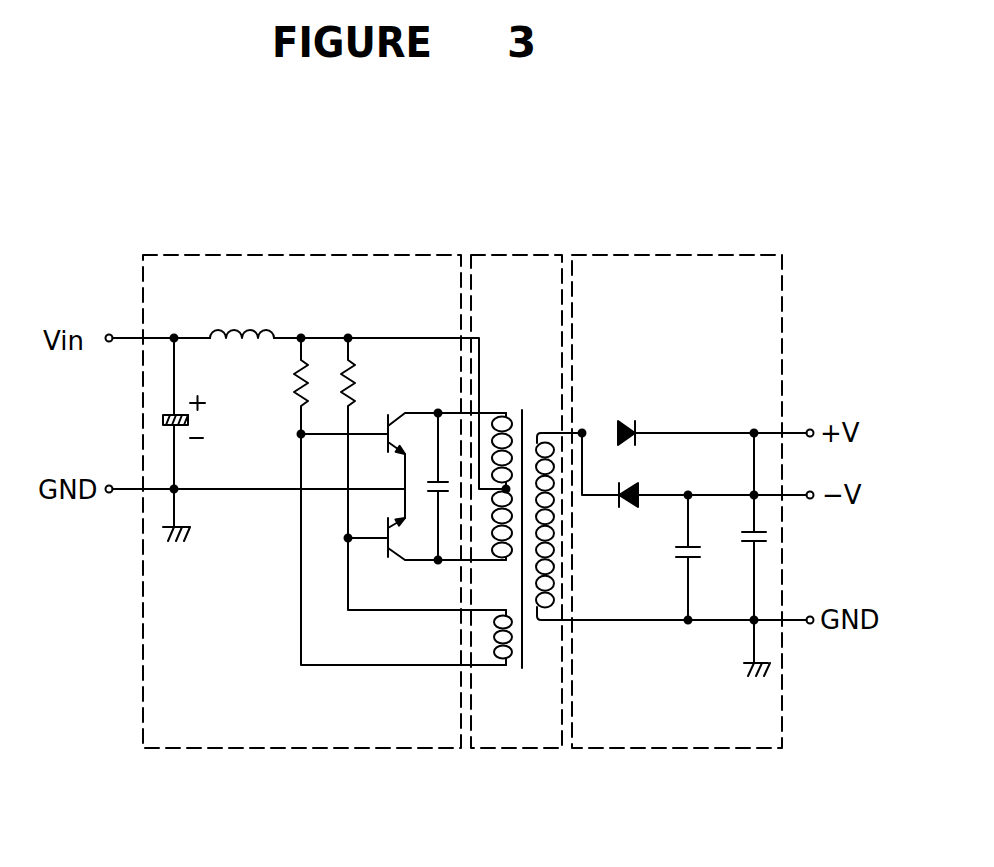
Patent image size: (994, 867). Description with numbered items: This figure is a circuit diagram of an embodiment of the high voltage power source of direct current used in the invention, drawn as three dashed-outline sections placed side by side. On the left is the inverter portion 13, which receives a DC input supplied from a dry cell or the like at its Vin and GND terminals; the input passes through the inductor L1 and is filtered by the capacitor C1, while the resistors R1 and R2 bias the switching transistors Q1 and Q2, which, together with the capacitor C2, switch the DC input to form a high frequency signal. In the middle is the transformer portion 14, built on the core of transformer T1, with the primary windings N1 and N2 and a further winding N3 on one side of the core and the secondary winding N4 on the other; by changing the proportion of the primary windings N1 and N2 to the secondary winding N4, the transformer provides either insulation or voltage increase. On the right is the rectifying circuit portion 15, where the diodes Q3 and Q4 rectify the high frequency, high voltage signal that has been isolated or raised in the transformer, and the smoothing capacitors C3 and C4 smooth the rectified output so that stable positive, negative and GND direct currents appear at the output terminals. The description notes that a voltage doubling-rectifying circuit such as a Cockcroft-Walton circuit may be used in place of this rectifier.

The inverter portion 13 is at (410, 270).
The transformer portion 14 is at (509, 270).
The rectifying circuit portion 15 is at (696, 270).
The input inductor L1 is at (242, 313).
The capacitor C1 is at (203, 413).
The resistor R1 is at (378, 501).
The resistor R2 is at (423, 474).
The switching transistor Q1 is at (395, 411).
The switching transistor Q2 is at (383, 557).
The capacitor C2 is at (423, 484).
The core of transformer T1 is at (523, 415).
The primary winding N1 is at (506, 412).
The primary winding N2 is at (493, 546).
The feedback winding N3 is at (512, 668).
The secondary winding N4 is at (539, 624).
The diode Q3 is at (622, 420).
The diode Q4 is at (623, 487).
The smoothing capacitor C3 is at (708, 557).
The smoothing capacitor C4 is at (781, 526).